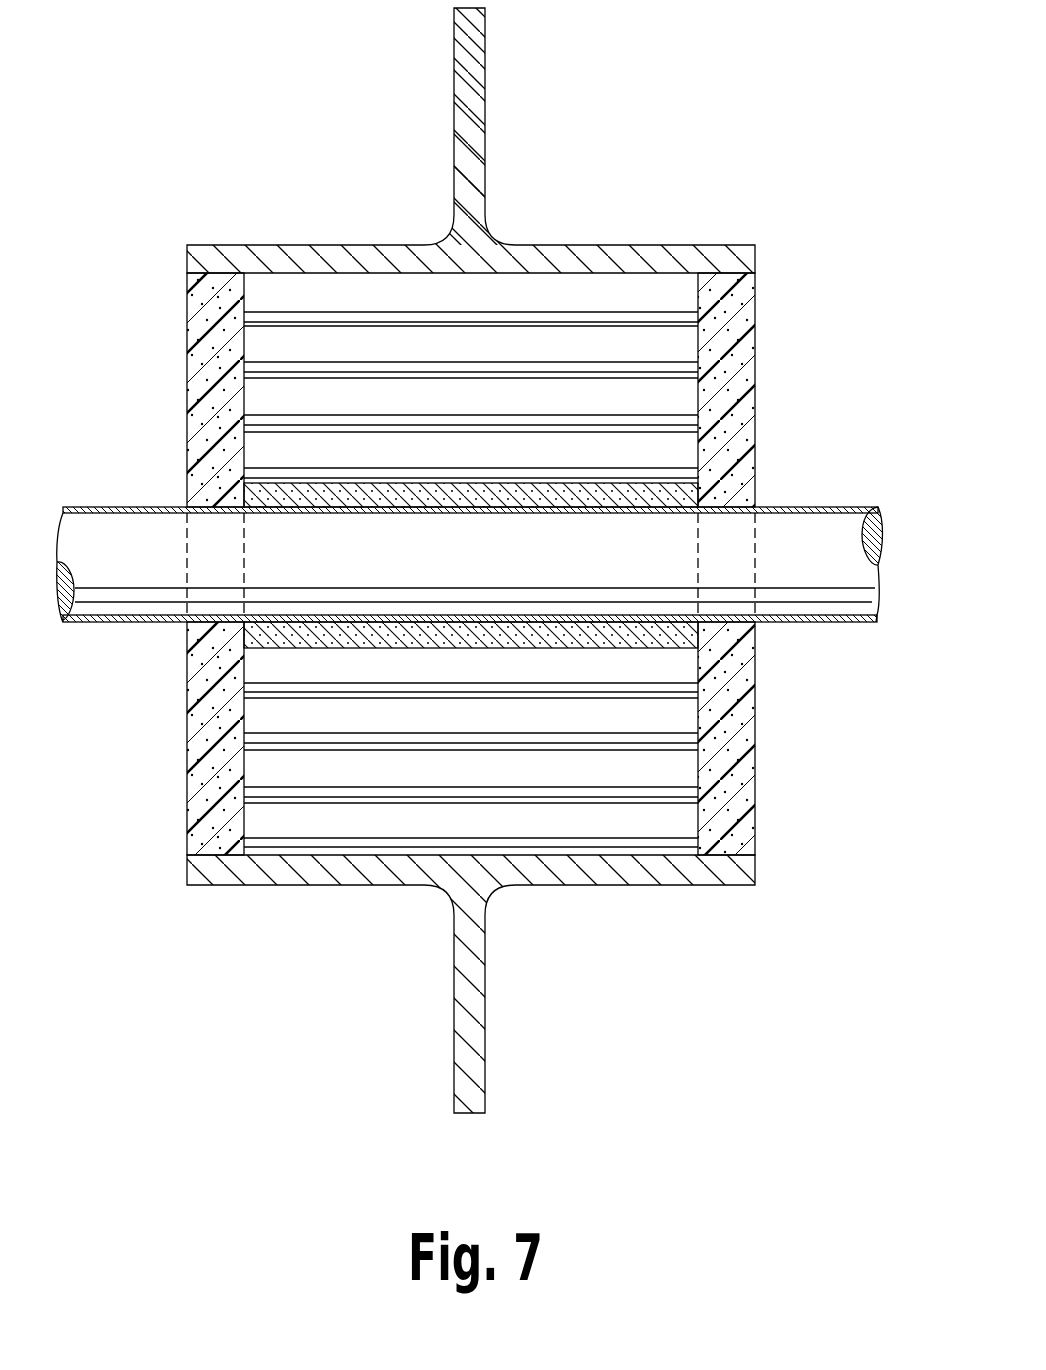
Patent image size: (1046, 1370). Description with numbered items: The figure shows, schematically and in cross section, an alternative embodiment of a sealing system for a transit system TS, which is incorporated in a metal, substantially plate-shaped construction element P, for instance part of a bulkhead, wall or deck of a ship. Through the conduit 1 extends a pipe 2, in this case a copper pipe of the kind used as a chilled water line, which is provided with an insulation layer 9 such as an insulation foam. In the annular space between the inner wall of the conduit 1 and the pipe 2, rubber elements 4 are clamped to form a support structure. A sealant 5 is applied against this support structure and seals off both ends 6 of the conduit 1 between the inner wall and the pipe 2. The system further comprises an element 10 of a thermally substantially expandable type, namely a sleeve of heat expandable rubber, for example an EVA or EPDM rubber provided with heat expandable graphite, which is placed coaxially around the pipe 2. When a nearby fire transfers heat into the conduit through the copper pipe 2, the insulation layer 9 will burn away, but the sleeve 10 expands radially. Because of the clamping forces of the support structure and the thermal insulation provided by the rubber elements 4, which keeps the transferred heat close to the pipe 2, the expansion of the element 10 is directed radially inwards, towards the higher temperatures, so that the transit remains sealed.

The conduit 1 is at (283, 262).
The pipe 2 is at (843, 540).
The rubber element 4 is at (560, 292).
The sealant 5 is at (213, 346).
The end of the conduit 6 is at (755, 855).
The insulation layer 9 is at (813, 622).
The thermally expandable element 10 is at (293, 625).
The plate-shaped construction element P is at (470, 88).
The transit system TS is at (680, 178).